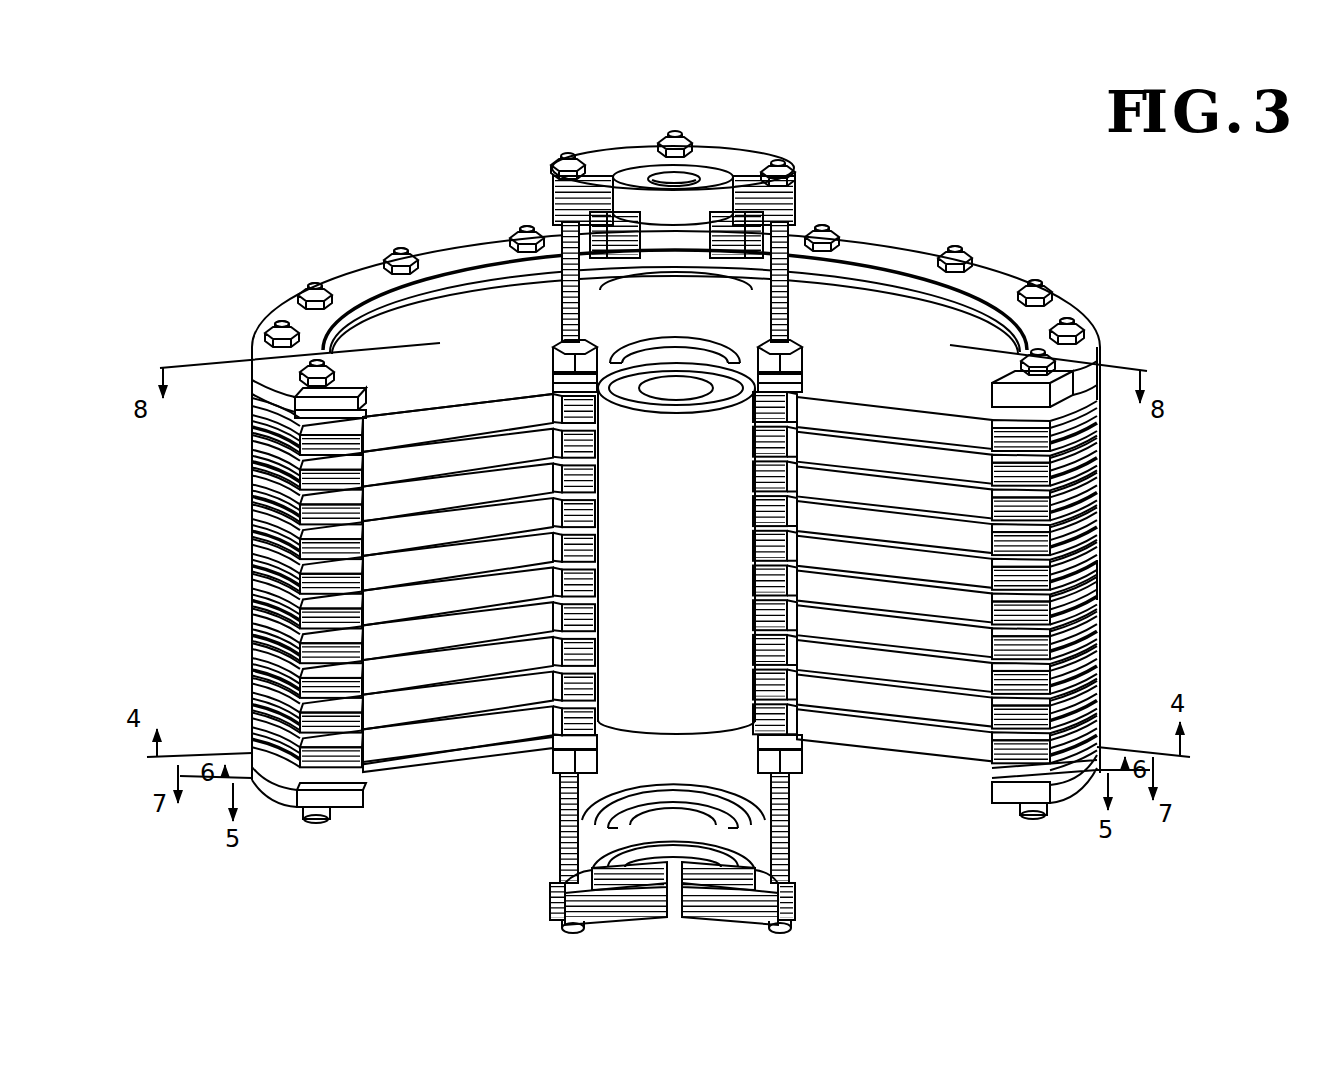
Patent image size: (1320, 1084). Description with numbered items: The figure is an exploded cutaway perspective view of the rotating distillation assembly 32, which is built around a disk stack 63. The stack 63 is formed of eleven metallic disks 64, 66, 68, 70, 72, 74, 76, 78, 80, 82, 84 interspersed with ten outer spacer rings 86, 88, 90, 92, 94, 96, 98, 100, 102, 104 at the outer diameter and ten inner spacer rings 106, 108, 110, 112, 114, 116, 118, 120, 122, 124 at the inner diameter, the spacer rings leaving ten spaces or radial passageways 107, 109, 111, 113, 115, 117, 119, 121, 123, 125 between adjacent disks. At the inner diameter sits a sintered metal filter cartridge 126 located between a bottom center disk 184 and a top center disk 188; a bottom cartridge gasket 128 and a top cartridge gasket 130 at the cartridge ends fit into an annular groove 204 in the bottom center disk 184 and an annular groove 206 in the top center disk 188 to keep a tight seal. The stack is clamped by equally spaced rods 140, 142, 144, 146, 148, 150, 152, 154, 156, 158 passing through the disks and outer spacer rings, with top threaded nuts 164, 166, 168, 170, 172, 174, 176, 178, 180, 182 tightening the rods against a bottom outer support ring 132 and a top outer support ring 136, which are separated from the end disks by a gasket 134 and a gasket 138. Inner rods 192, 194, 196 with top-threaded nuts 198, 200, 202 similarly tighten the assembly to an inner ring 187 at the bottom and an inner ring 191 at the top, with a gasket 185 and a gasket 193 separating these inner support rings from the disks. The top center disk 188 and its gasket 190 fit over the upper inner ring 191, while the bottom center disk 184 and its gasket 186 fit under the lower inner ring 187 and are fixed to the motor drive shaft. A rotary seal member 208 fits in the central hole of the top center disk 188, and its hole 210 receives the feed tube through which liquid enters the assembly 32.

The distillation assembly 32 is at (942, 160).
The disk stack 63 is at (1102, 580).
The disk 64 is at (444, 742).
The disk 66 is at (442, 708).
The disk 68 is at (442, 676).
The disk 70 is at (442, 640).
The disk 72 is at (440, 606).
The disk 74 is at (444, 572).
The disk 76 is at (440, 538).
The disk 78 is at (442, 504).
The disk 80 is at (444, 470).
The disk 82 is at (442, 436).
The disk 84 is at (442, 406).
The outer spacer ring 86 is at (250, 722).
The outer spacer ring 88 is at (250, 688).
The outer spacer ring 90 is at (250, 652).
The outer spacer ring 92 is at (250, 618).
The outer spacer ring 94 is at (250, 582).
The outer spacer ring 96 is at (250, 547).
The outer spacer ring 98 is at (250, 514).
The outer spacer ring 100 is at (250, 480).
The outer spacer ring 102 is at (250, 447).
The outer spacer ring 104 is at (250, 412).
The inner spacer ring 106 is at (802, 718).
The radial passageway 107 is at (895, 743).
The inner spacer ring 108 is at (802, 684).
The radial passageway 109 is at (898, 708).
The inner spacer ring 110 is at (802, 650).
The radial passageway 111 is at (898, 674).
The inner spacer ring 112 is at (802, 616).
The radial passageway 113 is at (898, 641).
The inner spacer ring 114 is at (802, 582).
The radial passageway 115 is at (898, 608).
The inner spacer ring 116 is at (802, 548).
The radial passageway 117 is at (903, 574).
The inner spacer ring 118 is at (802, 514).
The radial passageway 119 is at (903, 540).
The inner spacer ring 120 is at (802, 480).
The radial passageway 121 is at (898, 506).
The inner spacer ring 122 is at (802, 446).
The radial passageway 123 is at (903, 473).
The inner spacer ring 124 is at (802, 412).
The radial passageway 125 is at (905, 440).
The filter cartridge 126 is at (676, 548).
The bottom cartridge gasket 128 is at (640, 805).
The top cartridge gasket 130 is at (606, 348).
The bottom outer support ring 132 is at (368, 797).
The gasket 134 is at (368, 770).
The top outer support ring 136 is at (420, 383).
The gasket 138 is at (420, 405).
The rod 140 is at (335, 372).
The rod 142 is at (268, 333).
The rod 144 is at (315, 284).
The rod 146 is at (401, 249).
The rod 148 is at (527, 226).
The rod 150 is at (823, 227).
The rod 152 is at (958, 247).
The rod 154 is at (1043, 283).
The rod 156 is at (1080, 322).
The rod 158 is at (1020, 373).
The top threaded nut 164 is at (298, 382).
The top threaded nut 166 is at (267, 340).
The top threaded nut 168 is at (298, 298).
The top threaded nut 170 is at (388, 258).
The top threaded nut 172 is at (509, 243).
The top threaded nut 174 is at (842, 241).
The top threaded nut 176 is at (974, 260).
The top threaded nut 178 is at (1060, 297).
The top threaded nut 180 is at (1092, 335).
The top threaded nut 182 is at (1099, 398).
The bottom center disk 184 is at (728, 907).
The gasket 185 is at (551, 742).
The gasket 186 is at (795, 822).
The inner ring 187 is at (551, 762).
The top center disk 188 is at (748, 176).
The gasket 190 is at (758, 284).
The inner ring 191 is at (553, 360).
The rod 192 is at (566, 154).
The gasket 193 is at (553, 392).
The rod 194 is at (678, 133).
The rod 196 is at (795, 166).
The top-threaded nut 198 is at (552, 178).
The top-threaded nut 200 is at (696, 166).
The top-threaded nut 202 is at (800, 178).
The annular groove 204 is at (740, 857).
The annular groove 206 is at (578, 305).
The rotary seal member 208 is at (712, 172).
The hole 210 is at (668, 178).